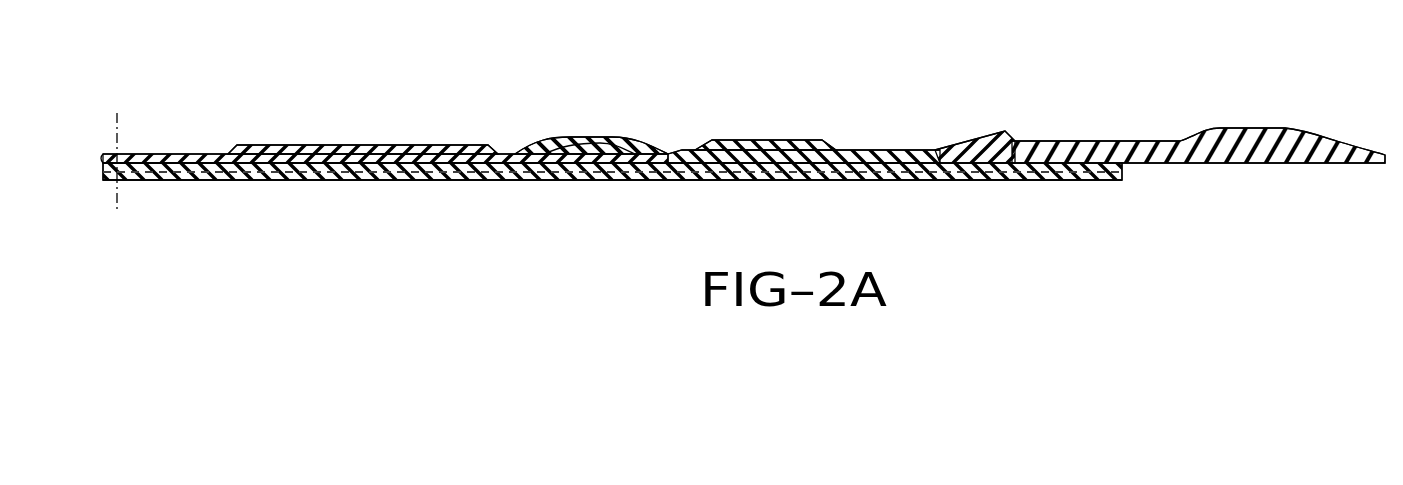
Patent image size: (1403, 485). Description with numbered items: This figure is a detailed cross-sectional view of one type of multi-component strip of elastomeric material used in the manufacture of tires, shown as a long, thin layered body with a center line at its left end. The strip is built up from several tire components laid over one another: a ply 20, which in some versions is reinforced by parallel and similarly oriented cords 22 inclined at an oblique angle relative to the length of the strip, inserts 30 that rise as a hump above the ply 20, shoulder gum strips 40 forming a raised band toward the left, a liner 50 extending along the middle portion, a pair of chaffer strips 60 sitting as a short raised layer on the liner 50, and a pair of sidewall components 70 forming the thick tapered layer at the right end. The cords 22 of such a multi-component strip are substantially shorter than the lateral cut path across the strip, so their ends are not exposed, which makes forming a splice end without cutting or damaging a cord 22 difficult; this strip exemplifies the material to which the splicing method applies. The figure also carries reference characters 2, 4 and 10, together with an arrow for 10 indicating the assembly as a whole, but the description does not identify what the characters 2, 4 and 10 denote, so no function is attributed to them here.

The top substrate layer 2 is at (506, 157).
The base layer 4 is at (512, 180).
The multilayer strip assembly 10 is at (1056, 101).
The ply 20 is at (557, 182).
The cords 22 is at (1057, 178).
The inserts 30 is at (624, 167).
The shoulder gum strips 40 is at (397, 155).
The liner 50 is at (680, 153).
The chaffer strips 60 is at (772, 143).
The sidewall components 70 is at (1293, 140).